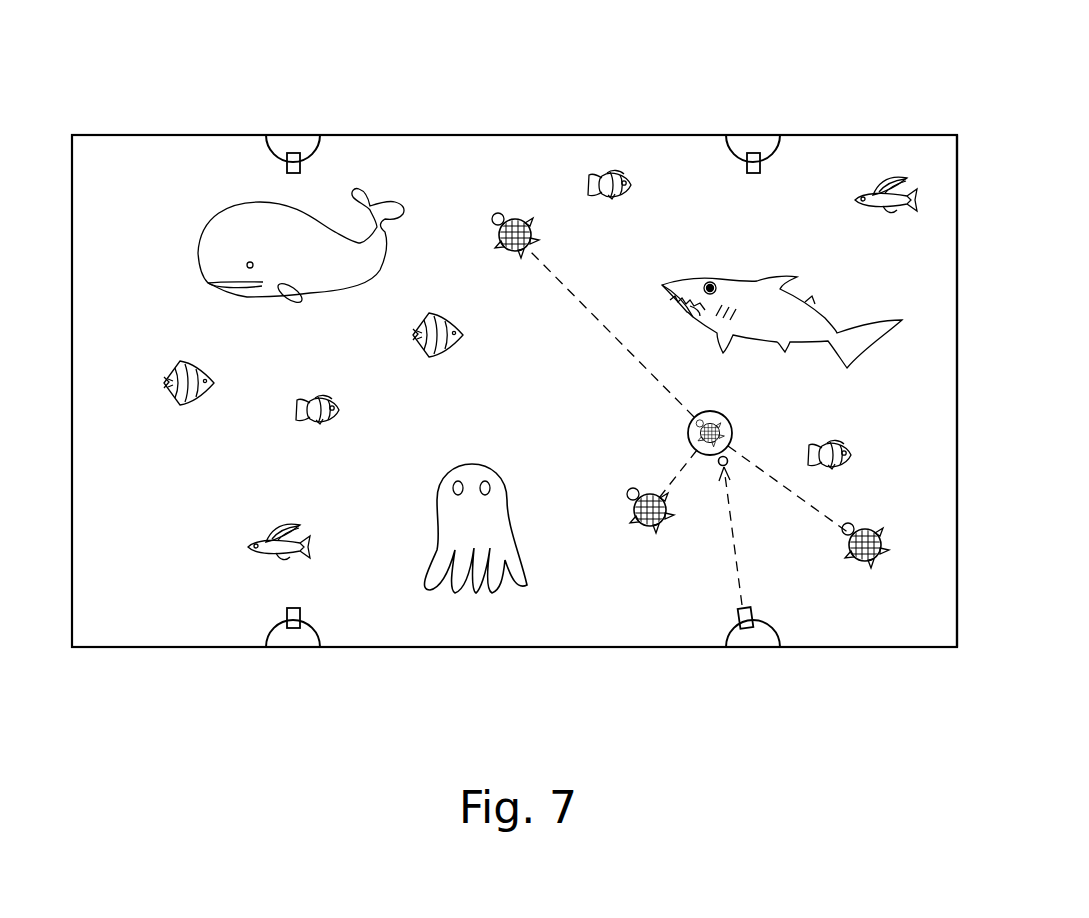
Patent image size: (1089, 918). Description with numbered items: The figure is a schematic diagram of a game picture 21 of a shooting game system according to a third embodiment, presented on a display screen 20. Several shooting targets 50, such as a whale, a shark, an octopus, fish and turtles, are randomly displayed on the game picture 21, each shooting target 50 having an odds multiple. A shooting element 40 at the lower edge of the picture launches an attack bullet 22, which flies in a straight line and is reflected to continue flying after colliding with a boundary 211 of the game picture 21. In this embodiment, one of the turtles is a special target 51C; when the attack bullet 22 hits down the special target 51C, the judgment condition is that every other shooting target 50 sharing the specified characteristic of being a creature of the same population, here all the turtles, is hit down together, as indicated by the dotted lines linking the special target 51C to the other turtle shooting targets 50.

The display screen 20 is at (960, 135).
The game picture 21 is at (938, 298).
The boundary 211 is at (957, 527).
The attack bullet 22 is at (730, 466).
The shooting element 40 is at (752, 640).
The shooting target 50 is at (507, 575).
The special target 51C is at (729, 421).